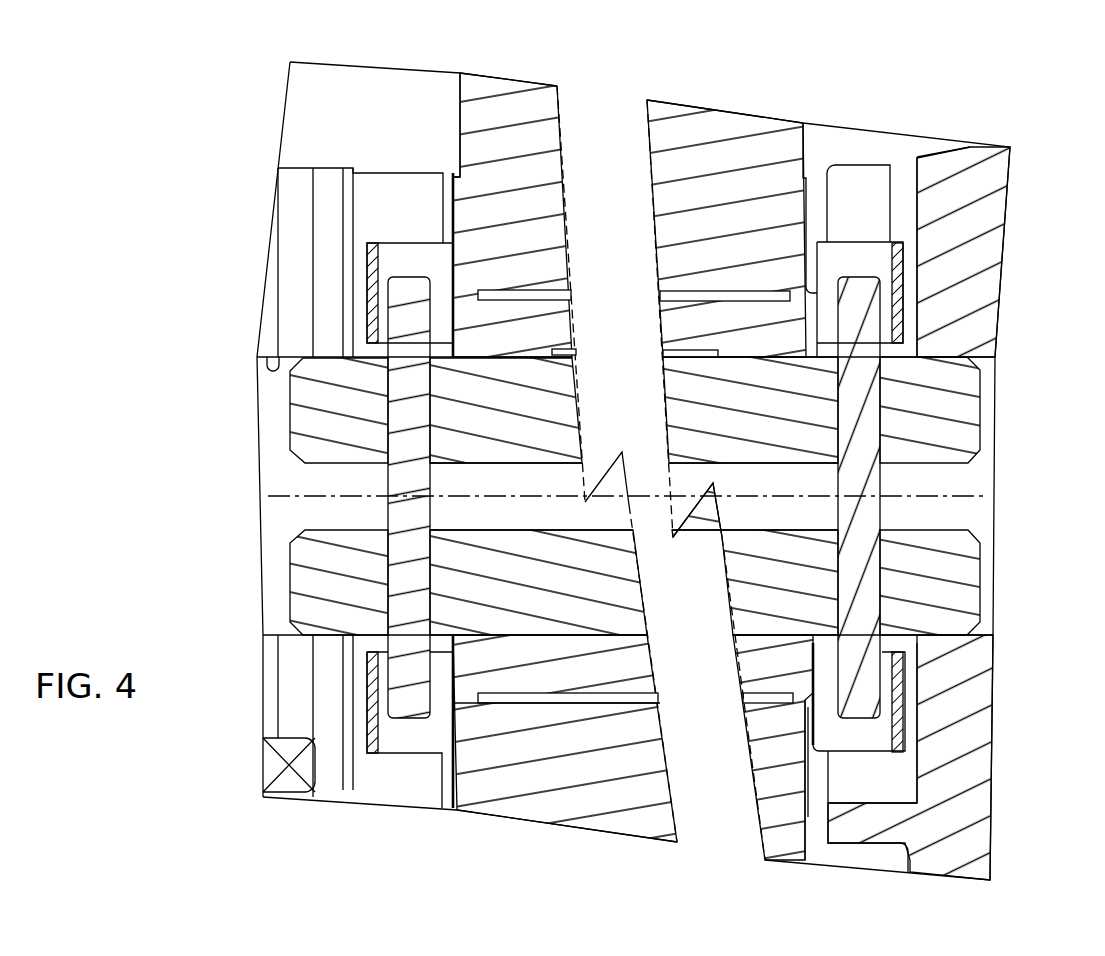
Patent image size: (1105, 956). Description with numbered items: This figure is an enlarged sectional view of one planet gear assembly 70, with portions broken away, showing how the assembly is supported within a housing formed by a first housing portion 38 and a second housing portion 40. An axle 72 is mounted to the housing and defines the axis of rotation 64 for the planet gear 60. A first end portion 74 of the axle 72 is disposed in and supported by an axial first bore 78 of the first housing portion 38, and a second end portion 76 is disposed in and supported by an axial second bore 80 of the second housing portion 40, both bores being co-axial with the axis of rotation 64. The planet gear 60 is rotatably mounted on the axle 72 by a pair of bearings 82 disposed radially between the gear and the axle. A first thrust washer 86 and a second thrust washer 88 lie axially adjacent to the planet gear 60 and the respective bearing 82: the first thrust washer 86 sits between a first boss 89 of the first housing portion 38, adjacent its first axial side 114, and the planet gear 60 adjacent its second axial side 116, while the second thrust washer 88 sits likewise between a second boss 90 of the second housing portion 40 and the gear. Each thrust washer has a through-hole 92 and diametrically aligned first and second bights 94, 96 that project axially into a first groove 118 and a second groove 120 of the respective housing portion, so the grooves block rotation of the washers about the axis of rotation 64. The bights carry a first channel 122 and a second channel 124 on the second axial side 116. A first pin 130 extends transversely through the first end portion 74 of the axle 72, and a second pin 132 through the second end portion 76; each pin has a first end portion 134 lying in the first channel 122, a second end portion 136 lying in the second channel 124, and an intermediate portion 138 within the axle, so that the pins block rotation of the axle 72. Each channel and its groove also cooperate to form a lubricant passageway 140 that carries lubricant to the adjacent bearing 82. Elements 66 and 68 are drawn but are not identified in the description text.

The first housing portion 38 is at (277, 164).
The second housing portion 40 is at (967, 187).
The planet gear 60 is at (810, 135).
The axis of rotation 64 is at (490, 497).
The first body portion 66 is at (480, 106).
The second body portion 68 is at (790, 134).
The planet gear assembly 70 is at (397, 80).
The axle 72 is at (555, 413).
The first end portion 74 is at (330, 367).
The second end portion 76 is at (938, 350).
The first bore 78 is at (268, 344).
The second bore 80 is at (993, 357).
The bearings 82 is at (670, 308).
The first thrust washer 86 is at (372, 220).
The second thrust washer 88 is at (900, 168).
The first boss 89 is at (297, 165).
The second boss 90 is at (957, 143).
The through-hole 92 is at (448, 634).
The first bight 94 is at (367, 267).
The second bight 96 is at (370, 712).
The first axial side 114 is at (367, 288).
The second axial side 116 is at (384, 370).
The first groove 118 is at (378, 230).
The second groove 120 is at (360, 787).
The first channel 122 is at (410, 268).
The second channel 124 is at (387, 753).
The first pin 130 is at (380, 483).
The second pin 132 is at (890, 484).
The first end portion 134 is at (555, 228).
The second end portion 136 is at (408, 722).
The intermediate portion 138 is at (432, 510).
The lubricant passageway 140 is at (380, 187).